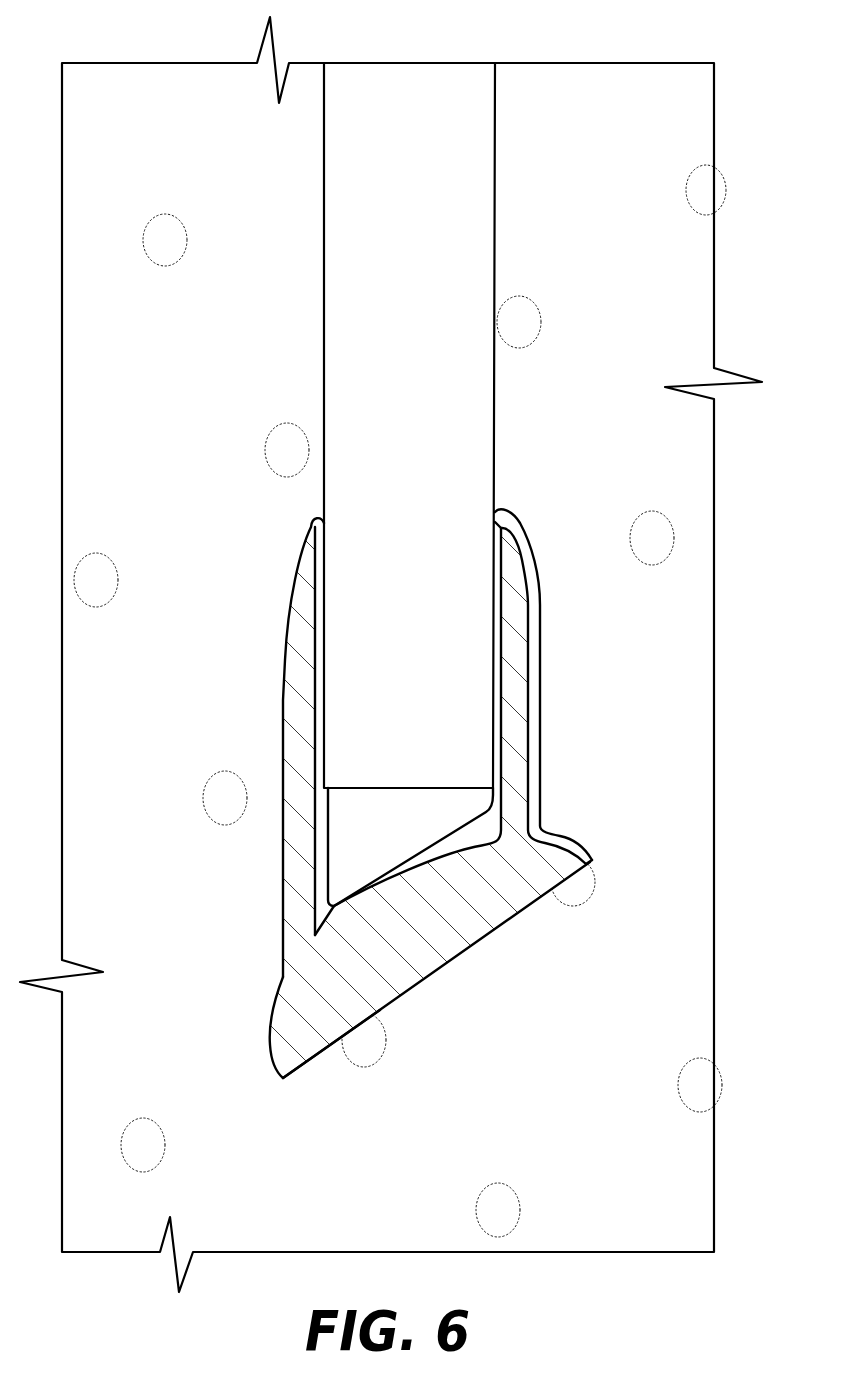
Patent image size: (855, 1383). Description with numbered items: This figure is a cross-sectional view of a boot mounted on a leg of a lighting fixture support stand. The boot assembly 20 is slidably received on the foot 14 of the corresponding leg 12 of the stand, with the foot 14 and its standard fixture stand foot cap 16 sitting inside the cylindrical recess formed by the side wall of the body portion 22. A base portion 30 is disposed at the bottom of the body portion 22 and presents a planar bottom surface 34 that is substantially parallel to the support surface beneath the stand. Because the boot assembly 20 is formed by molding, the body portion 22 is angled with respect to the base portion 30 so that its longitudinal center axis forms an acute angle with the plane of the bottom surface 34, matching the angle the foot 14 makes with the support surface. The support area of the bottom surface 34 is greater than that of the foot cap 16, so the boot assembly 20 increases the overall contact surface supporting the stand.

The leg 12 is at (455, 141).
The foot 14 is at (352, 915).
The fixture stand foot cap 16 is at (418, 833).
The boot assembly 20 is at (527, 700).
The body portion 22 is at (520, 768).
The base portion 30 is at (445, 928).
The bottom surface 34 is at (328, 1048).